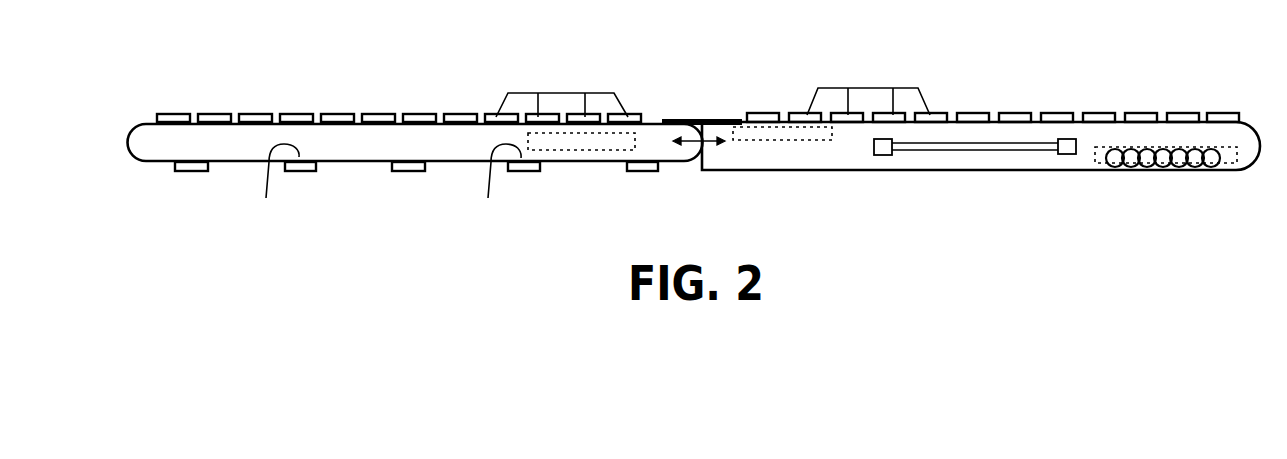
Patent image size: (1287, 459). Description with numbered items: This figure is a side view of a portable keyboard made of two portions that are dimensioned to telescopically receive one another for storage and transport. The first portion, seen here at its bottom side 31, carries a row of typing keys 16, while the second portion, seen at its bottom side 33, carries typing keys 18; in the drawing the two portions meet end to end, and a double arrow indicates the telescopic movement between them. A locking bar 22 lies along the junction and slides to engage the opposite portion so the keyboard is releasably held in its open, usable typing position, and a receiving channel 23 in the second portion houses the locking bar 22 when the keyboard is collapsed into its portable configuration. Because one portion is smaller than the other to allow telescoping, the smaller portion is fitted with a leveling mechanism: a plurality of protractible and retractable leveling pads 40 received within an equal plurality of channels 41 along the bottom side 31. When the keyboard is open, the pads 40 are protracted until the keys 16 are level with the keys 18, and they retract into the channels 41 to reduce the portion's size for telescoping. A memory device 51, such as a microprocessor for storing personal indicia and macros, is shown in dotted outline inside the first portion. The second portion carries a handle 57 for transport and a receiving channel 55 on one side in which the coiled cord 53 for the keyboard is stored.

The typing keys 16 is at (562, 90).
The typing keys 18 is at (868, 87).
The locking bar 22 is at (690, 120).
The receiving channel 23 is at (765, 147).
The bottom side 31 is at (353, 163).
The bottom side 33 is at (952, 169).
The leveling pad 40 is at (190, 172).
The channel 41 is at (381, 178).
The memory device 51 is at (583, 148).
The cord 53 is at (1188, 173).
The receiving channel 55 is at (1103, 163).
The handle 57 is at (992, 143).